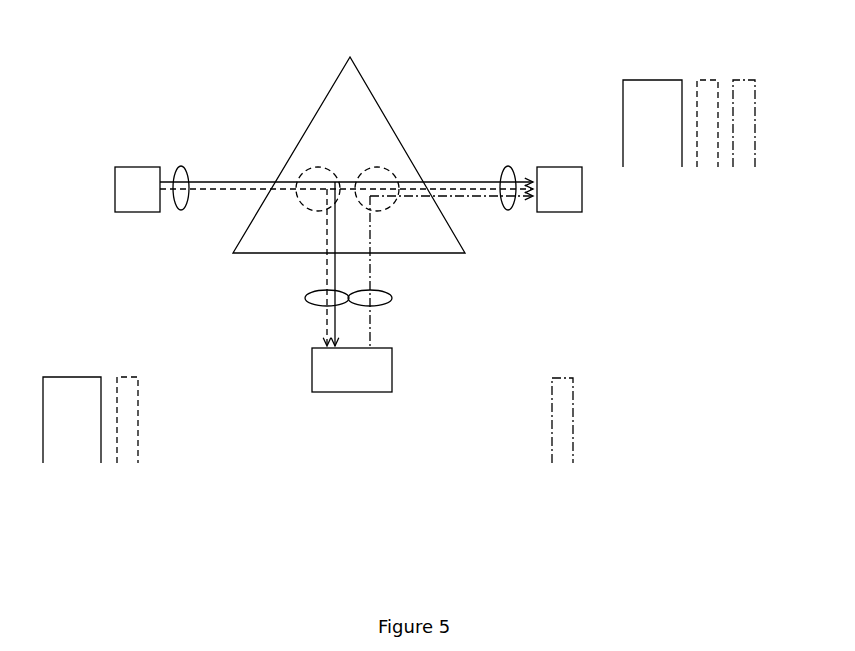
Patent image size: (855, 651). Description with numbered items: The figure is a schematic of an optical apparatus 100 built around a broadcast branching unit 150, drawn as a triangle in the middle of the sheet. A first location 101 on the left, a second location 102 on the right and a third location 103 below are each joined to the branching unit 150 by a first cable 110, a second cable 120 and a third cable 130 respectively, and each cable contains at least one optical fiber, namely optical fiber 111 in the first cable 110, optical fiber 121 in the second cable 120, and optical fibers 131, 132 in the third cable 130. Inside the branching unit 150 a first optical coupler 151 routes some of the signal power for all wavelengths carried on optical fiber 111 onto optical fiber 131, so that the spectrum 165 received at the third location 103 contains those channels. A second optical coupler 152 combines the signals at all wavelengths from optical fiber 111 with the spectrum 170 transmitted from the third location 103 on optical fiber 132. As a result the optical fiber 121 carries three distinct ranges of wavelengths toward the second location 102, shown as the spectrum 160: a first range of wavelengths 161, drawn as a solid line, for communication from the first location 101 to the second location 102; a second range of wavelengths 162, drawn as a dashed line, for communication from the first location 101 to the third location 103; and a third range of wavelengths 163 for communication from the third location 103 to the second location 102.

The optical apparatus 100 is at (467, 113).
The first location 101 is at (130, 213).
The second location 102 is at (582, 205).
The third location 103 is at (370, 392).
The first cable 110 is at (217, 172).
The optical fiber 111 is at (182, 168).
The second cable 120 is at (433, 158).
The optical fiber 121 is at (510, 210).
The third cable 130 is at (290, 292).
The optical fiber 131 is at (305, 297).
The optical fiber 132 is at (390, 298).
The branching unit 150 is at (315, 117).
The first optical coupler 151 is at (302, 203).
The second optical coupler 152 is at (392, 203).
The spectrum received at the second location 160 is at (712, 190).
The first range of wavelengths 161 is at (640, 80).
The second range of wavelengths 162 is at (704, 80).
The third range of wavelengths 163 is at (738, 80).
The spectrum received at the third location 165 is at (132, 481).
The spectrum transmitted from the third location 170 is at (567, 480).